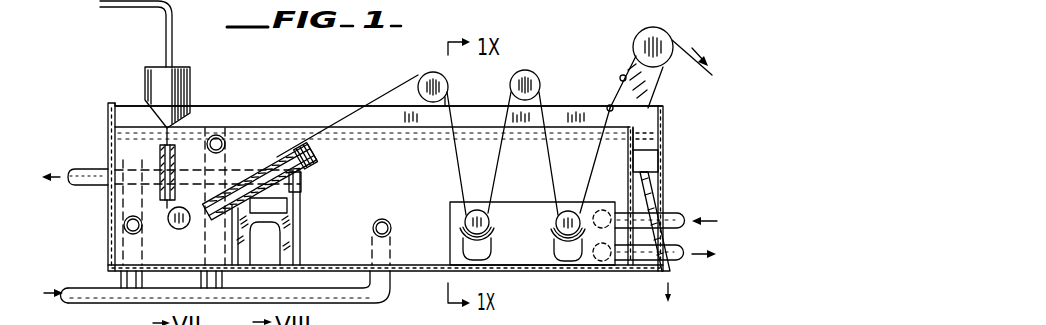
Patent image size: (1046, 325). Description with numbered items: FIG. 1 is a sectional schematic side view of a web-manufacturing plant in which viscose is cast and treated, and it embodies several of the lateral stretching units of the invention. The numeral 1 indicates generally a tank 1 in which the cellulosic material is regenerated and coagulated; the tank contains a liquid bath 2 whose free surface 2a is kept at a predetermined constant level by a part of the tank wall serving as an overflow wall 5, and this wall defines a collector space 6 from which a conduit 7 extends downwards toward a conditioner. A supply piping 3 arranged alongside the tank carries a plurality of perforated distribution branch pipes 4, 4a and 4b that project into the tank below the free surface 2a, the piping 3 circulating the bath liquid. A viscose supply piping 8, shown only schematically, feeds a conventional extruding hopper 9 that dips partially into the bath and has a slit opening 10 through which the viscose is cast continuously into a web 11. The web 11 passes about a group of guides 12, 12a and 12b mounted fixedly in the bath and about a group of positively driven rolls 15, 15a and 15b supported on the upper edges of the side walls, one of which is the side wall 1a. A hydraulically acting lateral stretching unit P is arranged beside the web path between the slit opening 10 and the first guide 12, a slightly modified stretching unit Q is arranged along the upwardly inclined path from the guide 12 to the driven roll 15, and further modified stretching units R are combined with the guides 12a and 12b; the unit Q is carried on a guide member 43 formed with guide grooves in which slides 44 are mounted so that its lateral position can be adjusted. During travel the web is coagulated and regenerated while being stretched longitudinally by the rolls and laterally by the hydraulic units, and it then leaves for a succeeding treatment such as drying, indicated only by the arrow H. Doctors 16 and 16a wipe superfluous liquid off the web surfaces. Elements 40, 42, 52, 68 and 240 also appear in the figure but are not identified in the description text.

The tank 1 is at (343, 103).
The side wall 1a is at (293, 117).
The liquid bath 2 is at (367, 147).
The free surface 2a is at (480, 128).
The supply piping 3 is at (121, 293).
The perforated distribution branch pipe 4 is at (137, 215).
The perforated distribution branch pipe 4a is at (217, 134).
The perforated distribution branch pipe 4b is at (385, 221).
The overflow wall 5 is at (641, 134).
The collector space 6 is at (656, 162).
The conduit 7 is at (655, 200).
The viscose supply piping 8 is at (134, 10).
The extruding hopper 9 is at (157, 72).
The slit opening 10 is at (160, 117).
The web 11 is at (402, 87).
The guide 12 is at (186, 229).
The guide 12a is at (490, 220).
The guide 12b is at (568, 209).
The driven roll 15 is at (438, 73).
The driven roll 15a is at (528, 72).
The driven roll 15b is at (658, 36).
The doctor 16 is at (608, 104).
The doctor 16a is at (621, 75).
The outlet pipe 40 is at (103, 187).
The support frame 42 is at (294, 250).
The guide member 43 is at (291, 205).
The slide 44 is at (301, 184).
The roller housing 52 is at (546, 262).
The inlet pipe 68 is at (683, 216).
The outlet pipe 240 is at (647, 258).
The lateral stretching unit P is at (160, 163).
The stretching unit Q is at (280, 157).
The stretching unit R is at (480, 250).
The arrow H is at (697, 67).